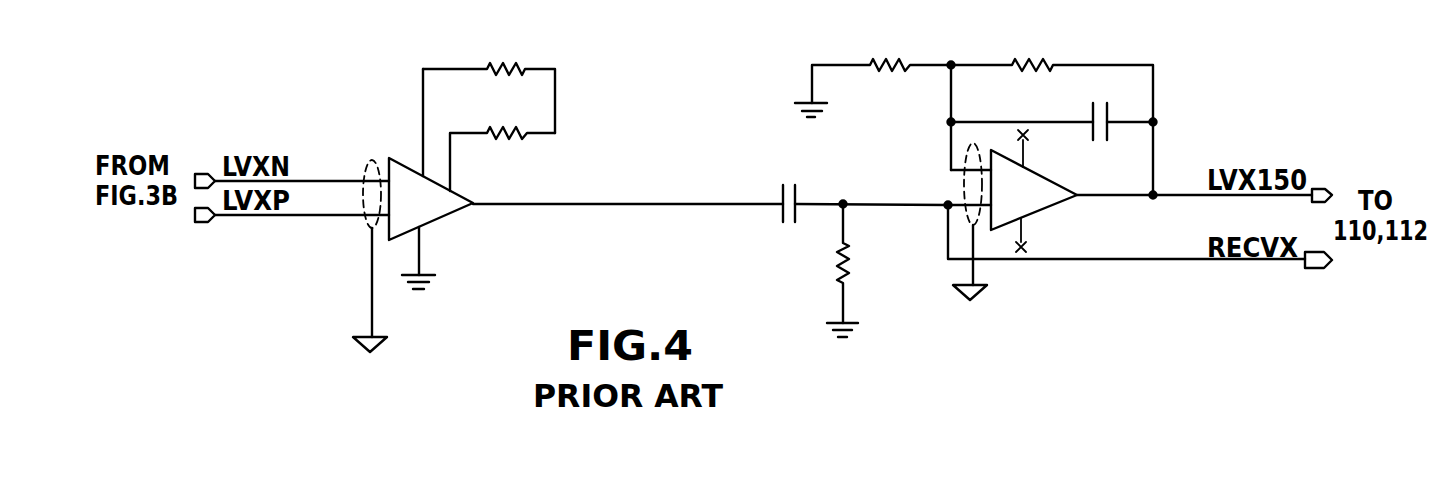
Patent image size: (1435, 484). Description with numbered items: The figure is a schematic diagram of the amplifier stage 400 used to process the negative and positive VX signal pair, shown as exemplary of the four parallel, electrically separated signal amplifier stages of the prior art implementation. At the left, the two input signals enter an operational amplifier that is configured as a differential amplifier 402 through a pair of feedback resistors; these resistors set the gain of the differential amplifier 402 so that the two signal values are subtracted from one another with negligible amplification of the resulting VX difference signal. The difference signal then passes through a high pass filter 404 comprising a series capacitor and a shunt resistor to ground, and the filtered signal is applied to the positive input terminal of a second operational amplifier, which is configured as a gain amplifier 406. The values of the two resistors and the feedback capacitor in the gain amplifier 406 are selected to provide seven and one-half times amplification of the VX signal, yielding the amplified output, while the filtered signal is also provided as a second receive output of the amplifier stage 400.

The amplifier stage 400 is at (697, 45).
The differential amplifier 402 is at (402, 142).
The high pass filter 404 is at (766, 254).
The gain amplifier 406 is at (931, 171).